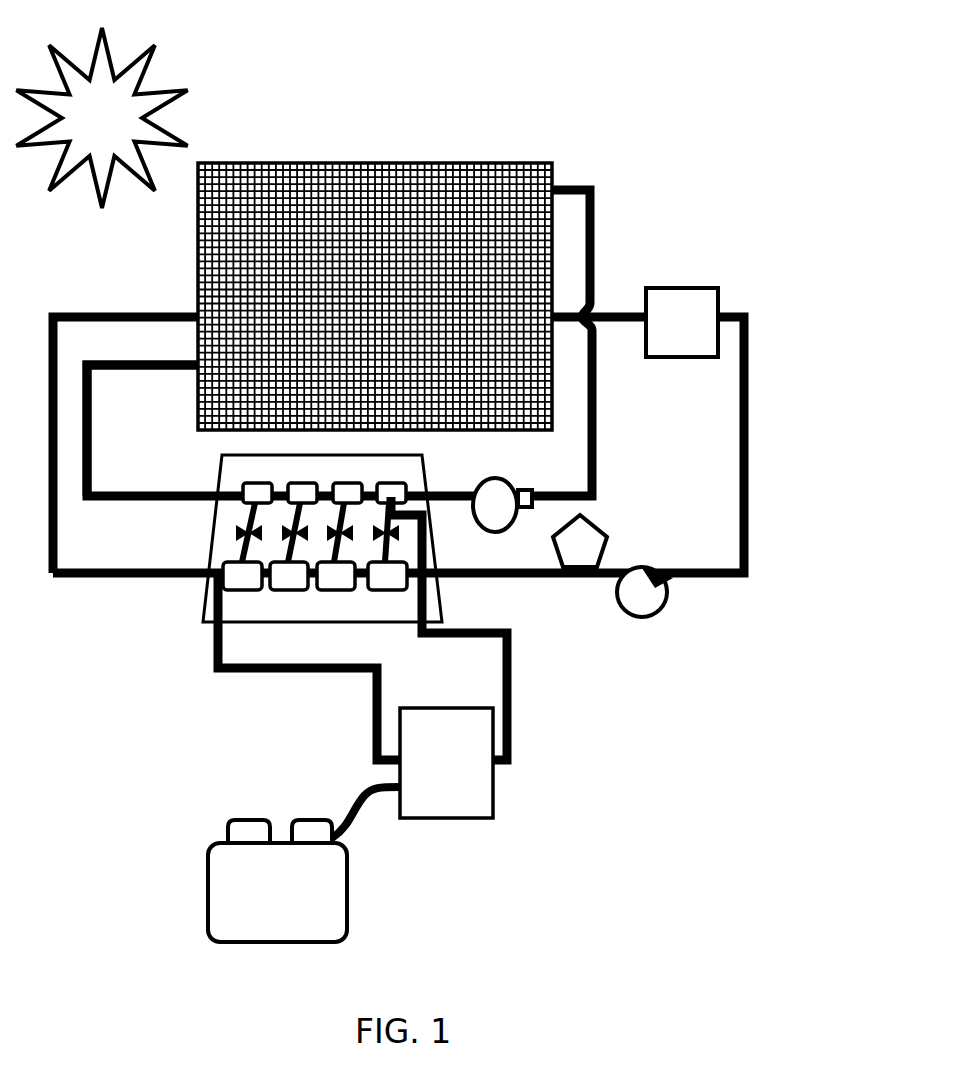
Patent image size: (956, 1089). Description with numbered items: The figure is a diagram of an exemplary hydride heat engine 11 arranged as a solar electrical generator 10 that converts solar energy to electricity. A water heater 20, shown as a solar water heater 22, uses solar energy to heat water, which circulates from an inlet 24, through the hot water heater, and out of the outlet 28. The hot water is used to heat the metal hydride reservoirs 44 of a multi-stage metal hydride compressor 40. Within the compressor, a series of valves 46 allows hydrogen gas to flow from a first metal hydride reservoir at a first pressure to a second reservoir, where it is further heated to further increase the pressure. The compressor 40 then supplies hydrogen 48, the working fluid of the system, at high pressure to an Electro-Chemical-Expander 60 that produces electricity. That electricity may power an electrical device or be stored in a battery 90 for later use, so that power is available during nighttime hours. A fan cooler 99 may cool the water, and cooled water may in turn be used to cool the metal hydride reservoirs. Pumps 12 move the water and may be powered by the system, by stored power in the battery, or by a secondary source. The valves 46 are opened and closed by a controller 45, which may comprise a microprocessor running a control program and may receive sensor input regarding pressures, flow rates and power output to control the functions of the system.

The solar electrical generator 10 is at (268, 124).
The hydride heat engine 11 is at (772, 163).
The pumps 12 is at (650, 618).
The water heater 20 is at (520, 207).
The solar water heater 22 is at (417, 193).
The inlet 24 is at (588, 185).
The outlet 28 is at (194, 368).
The multi-stage metal hydride compressor 40 is at (287, 583).
The metal hydride reservoirs 44 is at (243, 577).
The controller 45 is at (582, 545).
The valves 46 is at (233, 537).
The hydrogen 48 is at (445, 767).
The Electro-Chemical-Expander 60 is at (467, 793).
The battery 90 is at (218, 893).
The fan cooler 99 is at (680, 310).